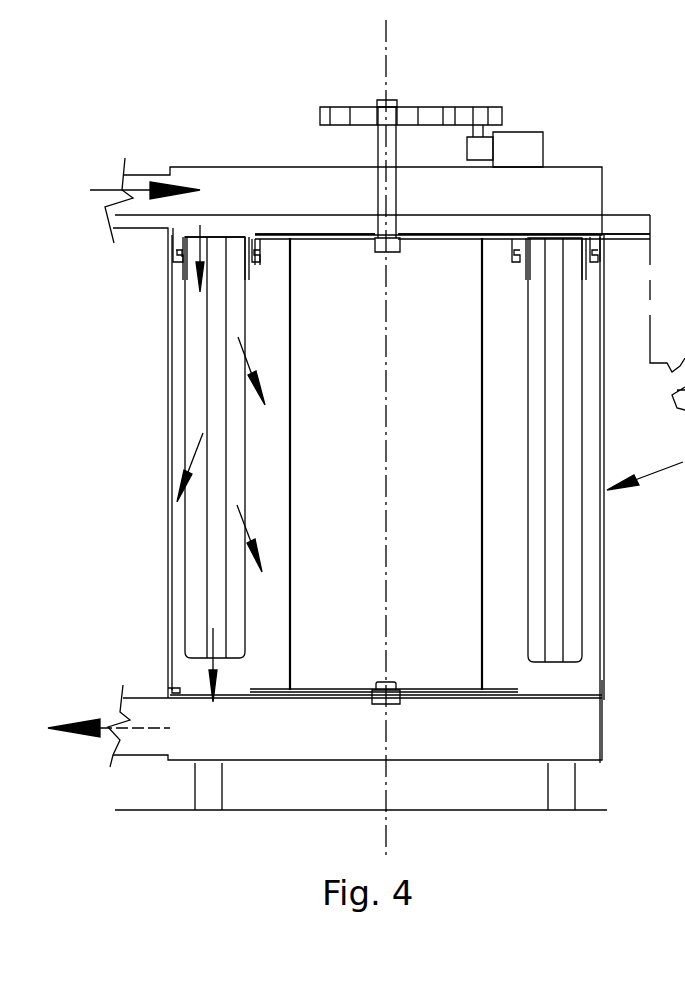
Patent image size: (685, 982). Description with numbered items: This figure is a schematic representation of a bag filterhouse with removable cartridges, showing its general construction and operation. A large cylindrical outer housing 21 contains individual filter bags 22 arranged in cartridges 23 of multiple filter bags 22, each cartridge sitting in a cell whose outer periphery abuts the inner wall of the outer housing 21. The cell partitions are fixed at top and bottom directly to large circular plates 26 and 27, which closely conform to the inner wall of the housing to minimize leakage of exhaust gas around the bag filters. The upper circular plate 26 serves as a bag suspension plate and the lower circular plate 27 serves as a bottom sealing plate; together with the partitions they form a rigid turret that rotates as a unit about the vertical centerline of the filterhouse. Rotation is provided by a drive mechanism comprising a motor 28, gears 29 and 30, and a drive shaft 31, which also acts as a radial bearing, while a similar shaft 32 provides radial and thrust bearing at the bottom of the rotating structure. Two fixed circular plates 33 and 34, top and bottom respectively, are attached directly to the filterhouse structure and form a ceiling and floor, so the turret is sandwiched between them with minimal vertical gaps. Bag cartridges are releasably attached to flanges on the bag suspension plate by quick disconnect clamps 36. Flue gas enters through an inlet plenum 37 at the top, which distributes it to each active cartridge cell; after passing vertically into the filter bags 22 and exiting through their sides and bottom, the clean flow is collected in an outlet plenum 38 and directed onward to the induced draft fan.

The outer housing 21 is at (170, 442).
The filter bags 22 is at (207, 588).
The cartridges 23 is at (225, 230).
The upper circular plate 26 is at (438, 240).
The lower circular plate 27 is at (415, 688).
The motor 28 is at (533, 130).
The gear 29 is at (488, 103).
The gear 30 is at (413, 105).
The drive shaft 31 is at (377, 163).
The shaft 32 is at (377, 682).
The fixed ceiling plate 33 is at (278, 233).
The fixed floor plate 34 is at (327, 698).
The quick disconnect clamps 36 is at (172, 258).
The inlet plenum 37 is at (543, 198).
The outlet plenum 38 is at (577, 725).